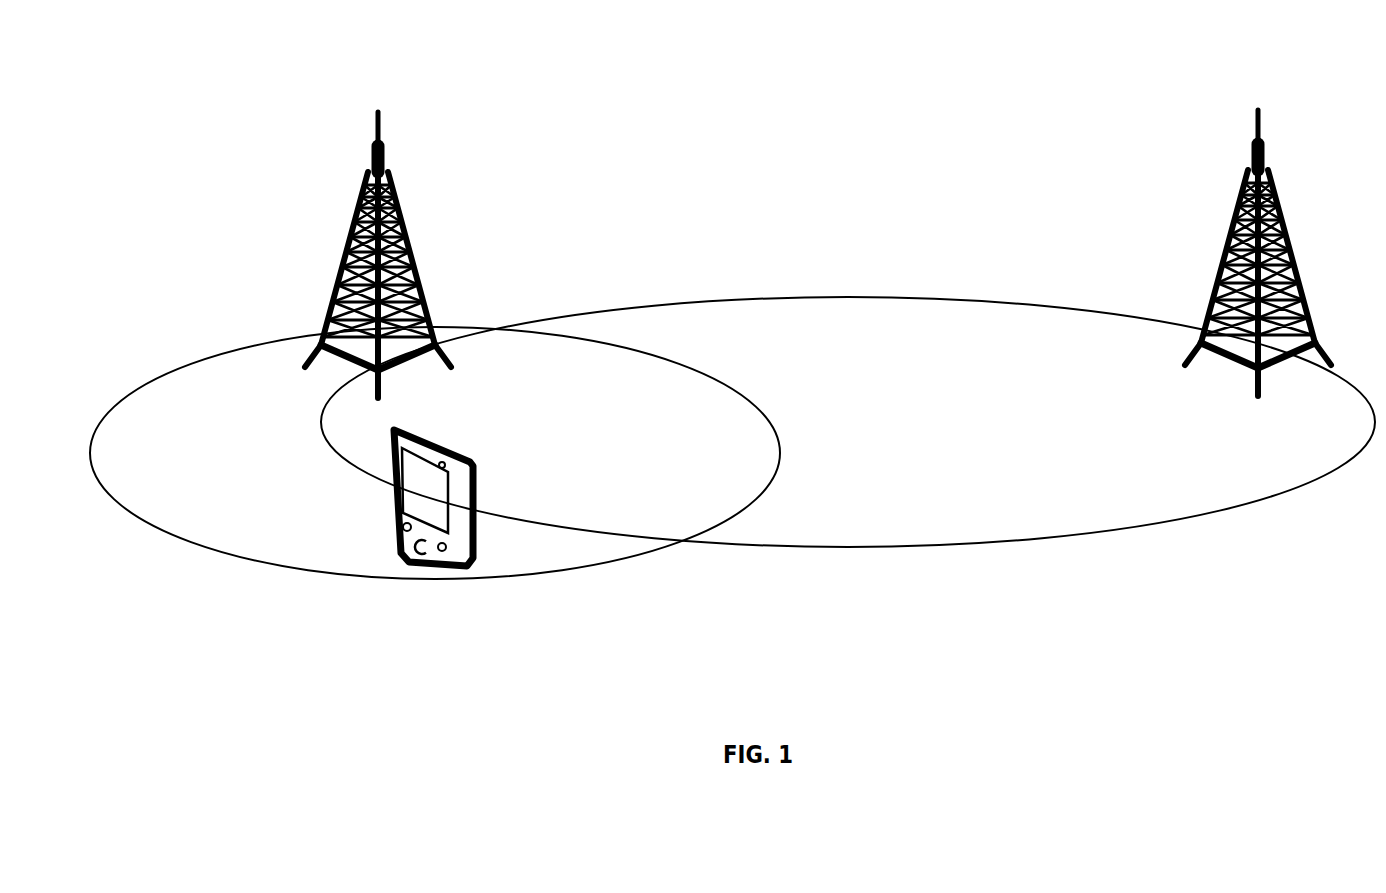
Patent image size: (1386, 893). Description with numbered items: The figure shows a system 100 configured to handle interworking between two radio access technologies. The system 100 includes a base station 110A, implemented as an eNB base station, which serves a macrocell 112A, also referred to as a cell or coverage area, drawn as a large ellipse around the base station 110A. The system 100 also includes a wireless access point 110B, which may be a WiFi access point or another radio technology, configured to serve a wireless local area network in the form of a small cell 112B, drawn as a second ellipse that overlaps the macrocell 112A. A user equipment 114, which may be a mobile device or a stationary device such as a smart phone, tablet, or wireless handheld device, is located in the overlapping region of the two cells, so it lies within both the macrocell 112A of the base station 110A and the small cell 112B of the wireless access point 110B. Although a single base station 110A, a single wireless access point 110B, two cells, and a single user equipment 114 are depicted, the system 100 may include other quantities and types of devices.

The system 100 is at (782, 48).
The base station 110A is at (1288, 228).
The wireless access point 110B is at (407, 233).
The macrocell 112A is at (1042, 538).
The small cell 112B is at (218, 555).
The user equipment 114 is at (482, 477).